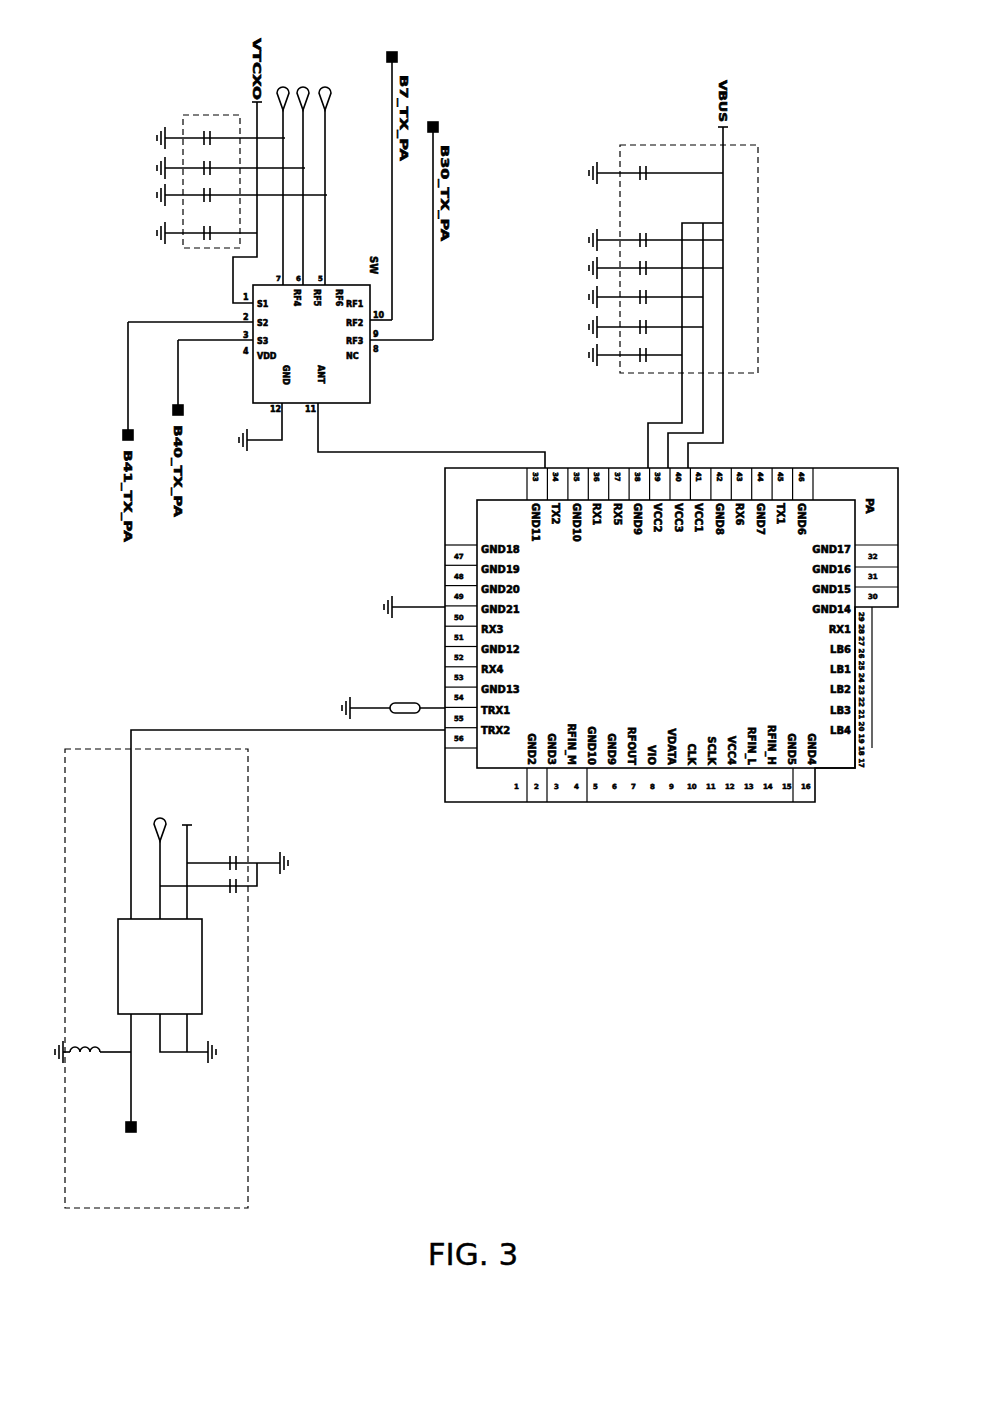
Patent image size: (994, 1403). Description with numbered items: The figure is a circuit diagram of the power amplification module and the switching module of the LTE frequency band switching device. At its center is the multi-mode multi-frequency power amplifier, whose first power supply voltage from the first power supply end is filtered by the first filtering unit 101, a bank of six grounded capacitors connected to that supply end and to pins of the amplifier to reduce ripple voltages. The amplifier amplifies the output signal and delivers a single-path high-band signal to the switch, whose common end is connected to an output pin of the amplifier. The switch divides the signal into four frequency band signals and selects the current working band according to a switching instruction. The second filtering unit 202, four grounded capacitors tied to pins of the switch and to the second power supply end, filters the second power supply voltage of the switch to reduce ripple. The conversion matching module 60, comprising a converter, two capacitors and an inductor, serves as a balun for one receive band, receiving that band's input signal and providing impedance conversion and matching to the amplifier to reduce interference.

The second filtering unit 202 is at (225, 207).
The first filtering unit 101 is at (716, 279).
The conversion matching module 60 is at (193, 978).